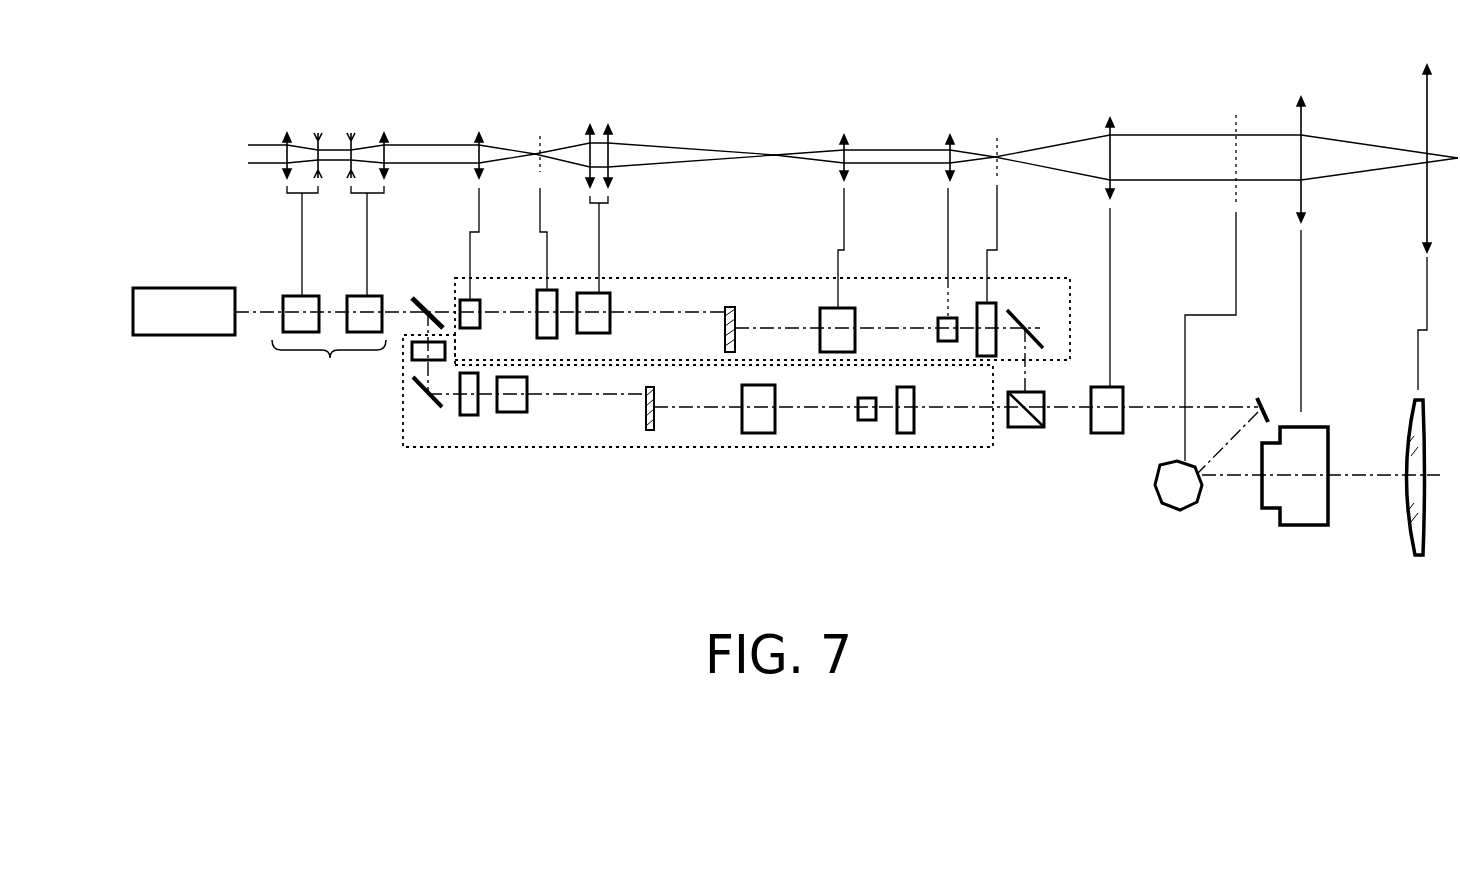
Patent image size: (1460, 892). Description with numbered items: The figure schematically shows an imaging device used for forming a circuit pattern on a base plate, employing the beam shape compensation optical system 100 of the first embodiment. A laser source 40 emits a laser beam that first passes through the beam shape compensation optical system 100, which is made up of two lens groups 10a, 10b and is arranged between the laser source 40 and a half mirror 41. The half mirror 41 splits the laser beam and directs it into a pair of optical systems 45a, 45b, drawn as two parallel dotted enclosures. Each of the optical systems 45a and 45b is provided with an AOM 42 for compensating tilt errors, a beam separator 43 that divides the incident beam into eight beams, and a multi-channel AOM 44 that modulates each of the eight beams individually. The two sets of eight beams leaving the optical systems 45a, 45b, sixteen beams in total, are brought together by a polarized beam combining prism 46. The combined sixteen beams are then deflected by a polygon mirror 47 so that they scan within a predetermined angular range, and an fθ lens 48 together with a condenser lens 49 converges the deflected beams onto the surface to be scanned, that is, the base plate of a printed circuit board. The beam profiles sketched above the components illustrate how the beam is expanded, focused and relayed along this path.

The laser source 40 is at (175, 288).
The lens group 10a is at (292, 295).
The lens group 10b is at (356, 295).
The beam shape compensation optical system 100 is at (329, 365).
The half mirror 41 is at (417, 300).
The AOM 42 is at (550, 289).
The beam separator 43 is at (734, 318).
The multi-channel AOM 44 is at (997, 308).
The optical system 45a is at (680, 276).
The optical system 45b is at (737, 448).
The polarized beam combining prism 46 is at (1030, 432).
The polygon mirror 47 is at (1162, 485).
The fθ lens 48 is at (1305, 525).
The condenser lens 49 is at (1413, 436).